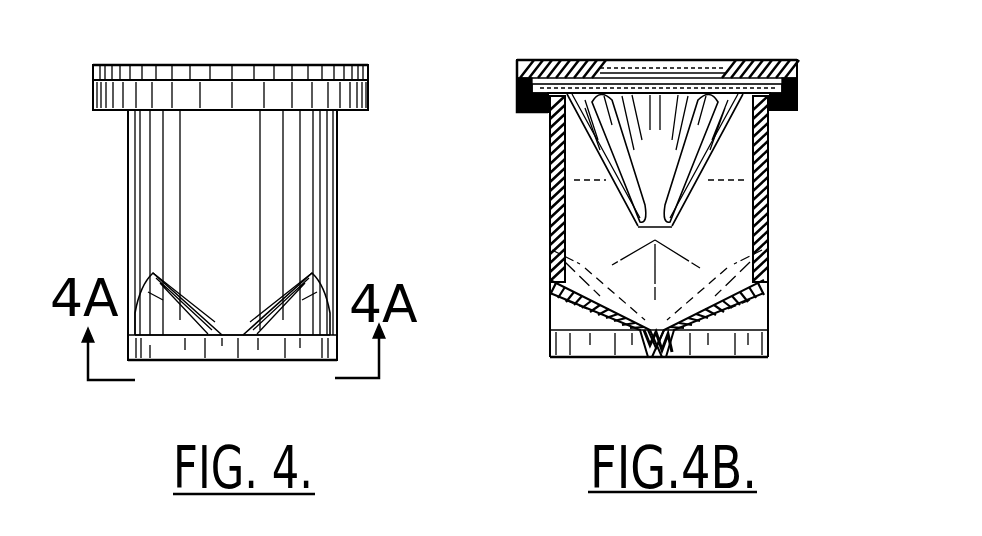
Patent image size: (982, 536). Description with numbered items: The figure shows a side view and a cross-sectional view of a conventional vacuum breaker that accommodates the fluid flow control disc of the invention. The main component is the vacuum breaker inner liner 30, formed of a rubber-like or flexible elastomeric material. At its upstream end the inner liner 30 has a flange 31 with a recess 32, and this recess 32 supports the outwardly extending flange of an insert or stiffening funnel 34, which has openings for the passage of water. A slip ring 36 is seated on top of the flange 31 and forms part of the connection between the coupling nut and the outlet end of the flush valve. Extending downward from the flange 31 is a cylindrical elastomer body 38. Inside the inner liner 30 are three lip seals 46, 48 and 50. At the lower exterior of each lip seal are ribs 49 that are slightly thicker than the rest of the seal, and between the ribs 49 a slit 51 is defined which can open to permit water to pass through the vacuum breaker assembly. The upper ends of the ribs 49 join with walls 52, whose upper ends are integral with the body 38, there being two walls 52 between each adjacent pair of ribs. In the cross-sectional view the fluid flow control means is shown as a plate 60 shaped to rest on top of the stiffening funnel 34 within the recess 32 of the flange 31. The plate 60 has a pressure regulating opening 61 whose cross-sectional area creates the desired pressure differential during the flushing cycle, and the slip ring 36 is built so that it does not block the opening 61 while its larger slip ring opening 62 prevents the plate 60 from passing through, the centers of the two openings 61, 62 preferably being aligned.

In FIG. 4, the vacuum breaker inner liner 30 is at (218, 235).
In FIG. 4B, the vacuum breaker inner liner 30 is at (653, 226).
In FIG. 4, the flange 31 is at (358, 64).
In FIG. 4B, the flange 31 is at (797, 60).
In FIG. 4B, the recess 32 is at (563, 48).
In FIG. 4B, the stiffening funnel 34 is at (707, 167).
In FIG. 4, the slip ring 36 is at (97, 67).
In FIG. 4B, the slip ring 36 is at (774, 54).
In FIG. 4, the body 38 is at (338, 160).
In FIG. 4B, the body 38 is at (770, 200).
In FIG. 4, the lip seal 46 is at (220, 363).
In FIG. 4B, the lip seal 46 is at (668, 360).
In FIG. 4, the lip seal 48 is at (300, 360).
In FIG. 4B, the ribs 49 is at (646, 358).
In FIG. 4, the lip seal 50 is at (177, 356).
In FIG. 4B, the slit 51 is at (606, 358).
In FIG. 4, the walls 52 is at (310, 302).
In FIG. 4B, the walls 52 is at (708, 290).
In FIG. 4B, the plate 60 is at (600, 82).
In FIG. 4B, the pressure regulating opening 61 is at (668, 62).
In FIG. 4B, the slip ring opening 62 is at (713, 66).